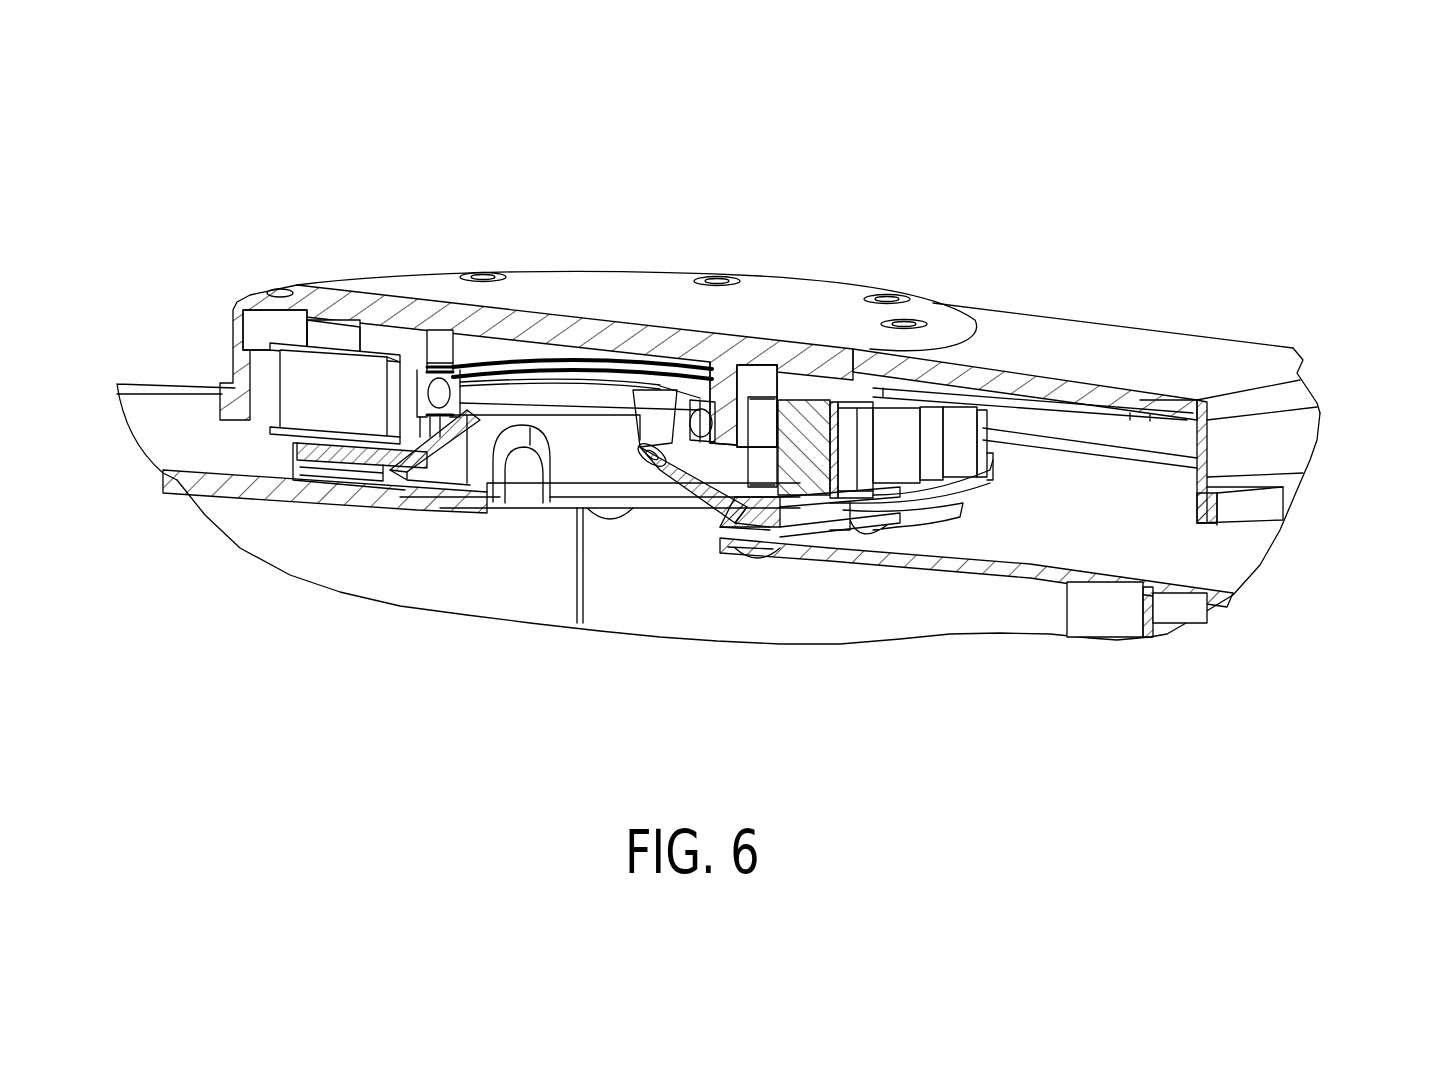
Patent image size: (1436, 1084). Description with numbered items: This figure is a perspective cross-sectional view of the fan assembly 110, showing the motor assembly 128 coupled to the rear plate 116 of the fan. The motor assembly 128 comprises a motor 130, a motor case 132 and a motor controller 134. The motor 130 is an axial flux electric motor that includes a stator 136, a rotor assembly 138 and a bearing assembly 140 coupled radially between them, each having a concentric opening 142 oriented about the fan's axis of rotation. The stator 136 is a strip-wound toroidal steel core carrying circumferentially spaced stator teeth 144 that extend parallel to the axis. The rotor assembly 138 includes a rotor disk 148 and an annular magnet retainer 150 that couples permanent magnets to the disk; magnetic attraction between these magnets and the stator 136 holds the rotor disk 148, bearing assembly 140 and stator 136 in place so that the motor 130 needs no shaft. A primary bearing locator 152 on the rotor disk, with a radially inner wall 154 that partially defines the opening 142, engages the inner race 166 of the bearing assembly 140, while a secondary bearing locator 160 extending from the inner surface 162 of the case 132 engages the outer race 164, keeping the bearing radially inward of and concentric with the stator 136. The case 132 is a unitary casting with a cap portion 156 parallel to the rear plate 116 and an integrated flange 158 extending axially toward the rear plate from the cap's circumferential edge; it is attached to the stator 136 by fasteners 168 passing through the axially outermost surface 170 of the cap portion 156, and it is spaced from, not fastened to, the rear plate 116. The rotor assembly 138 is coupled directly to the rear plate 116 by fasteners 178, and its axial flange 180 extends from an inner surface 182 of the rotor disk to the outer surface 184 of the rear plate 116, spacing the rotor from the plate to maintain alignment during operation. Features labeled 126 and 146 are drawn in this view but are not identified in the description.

The fan assembly 110 is at (1270, 222).
The rear plate 116 is at (187, 477).
The housing 126 is at (370, 700).
The motor assembly 128 is at (818, 257).
The motor 130 is at (262, 329).
The motor case 132 is at (1103, 313).
The motor controller 134 is at (1160, 428).
The stator 136 is at (333, 337).
The rotor assembly 138 is at (720, 522).
The bearing assembly 140 is at (440, 347).
The concentric opening 142 is at (582, 392).
The stator teeth 144 is at (815, 415).
The box 146 is at (297, 393).
The rotor disk 148 is at (333, 480).
The annular magnet retainer 150 is at (885, 533).
The primary bearing locator 152 is at (655, 462).
The radially inner wall 154 is at (478, 410).
The cap portion 156 is at (1145, 400).
The integrated flange 158 is at (1200, 495).
The secondary bearing locator 160 is at (722, 372).
The inner surface 162 is at (518, 350).
The outer race 164 is at (397, 483).
The inner race 166 is at (712, 378).
The fasteners 168 is at (887, 298).
The axially outermost surface 170 is at (1020, 332).
The fasteners 178 is at (783, 535).
The axial flange 180 is at (772, 532).
The inner surface 182 is at (823, 527).
The outer surface 184 is at (1210, 563).